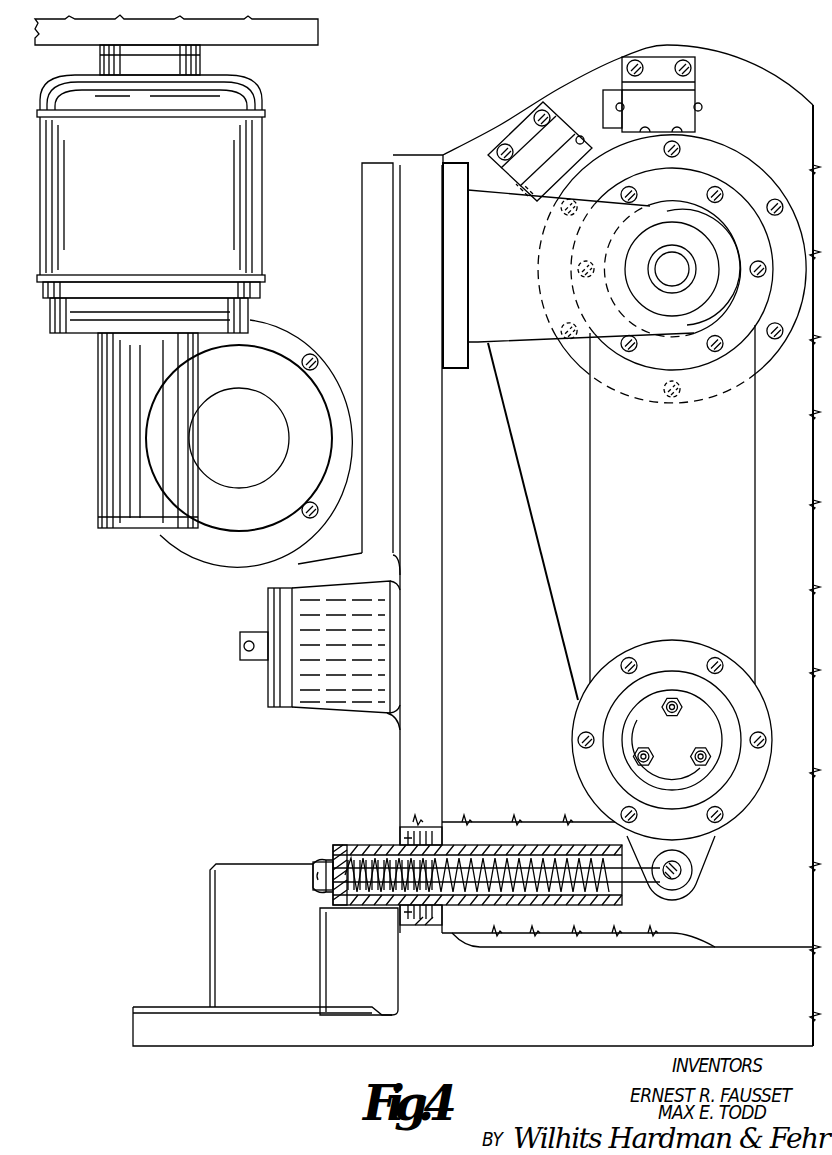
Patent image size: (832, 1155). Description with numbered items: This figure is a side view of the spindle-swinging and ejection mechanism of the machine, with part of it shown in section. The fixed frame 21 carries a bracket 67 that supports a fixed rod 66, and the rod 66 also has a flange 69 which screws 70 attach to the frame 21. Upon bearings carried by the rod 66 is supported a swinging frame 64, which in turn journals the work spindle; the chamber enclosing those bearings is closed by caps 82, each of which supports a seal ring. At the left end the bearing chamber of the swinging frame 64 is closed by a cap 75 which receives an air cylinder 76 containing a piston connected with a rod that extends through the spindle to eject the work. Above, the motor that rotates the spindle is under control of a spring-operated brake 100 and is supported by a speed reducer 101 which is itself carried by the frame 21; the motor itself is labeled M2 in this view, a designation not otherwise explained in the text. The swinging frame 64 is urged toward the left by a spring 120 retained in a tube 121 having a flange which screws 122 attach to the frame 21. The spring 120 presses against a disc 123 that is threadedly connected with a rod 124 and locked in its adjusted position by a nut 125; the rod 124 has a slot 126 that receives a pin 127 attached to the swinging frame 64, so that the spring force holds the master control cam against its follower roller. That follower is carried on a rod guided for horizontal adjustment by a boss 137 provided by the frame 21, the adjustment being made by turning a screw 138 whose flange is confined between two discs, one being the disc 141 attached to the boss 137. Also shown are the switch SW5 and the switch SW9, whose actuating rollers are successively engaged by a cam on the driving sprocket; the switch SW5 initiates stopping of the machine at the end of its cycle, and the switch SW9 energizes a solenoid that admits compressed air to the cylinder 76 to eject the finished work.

The brake 100 is at (283, 30).
The motor M2 is at (258, 155).
The speed reducer 101 is at (113, 417).
The disc 141 is at (268, 604).
The screw 138 is at (240, 653).
The boss 137 is at (350, 714).
The frame 21 is at (398, 750).
The screws 122 is at (400, 838).
The disc 123 is at (345, 860).
The spring 120 is at (488, 855).
The tube 121 is at (531, 855).
The rod 124 is at (318, 878).
The nut 125 is at (332, 893).
The slot 126 is at (682, 870).
The pin 127 is at (680, 878).
The swinging frame 64 is at (712, 851).
The cap 75 is at (757, 780).
The air cylinder 76 is at (695, 731).
The fixed rod 66 is at (684, 278).
The flange 69 is at (757, 365).
The screws 70 is at (777, 200).
The caps 82 is at (730, 190).
The bracket 67 is at (512, 335).
The switch SW5 is at (520, 120).
The switch SW9 is at (633, 57).